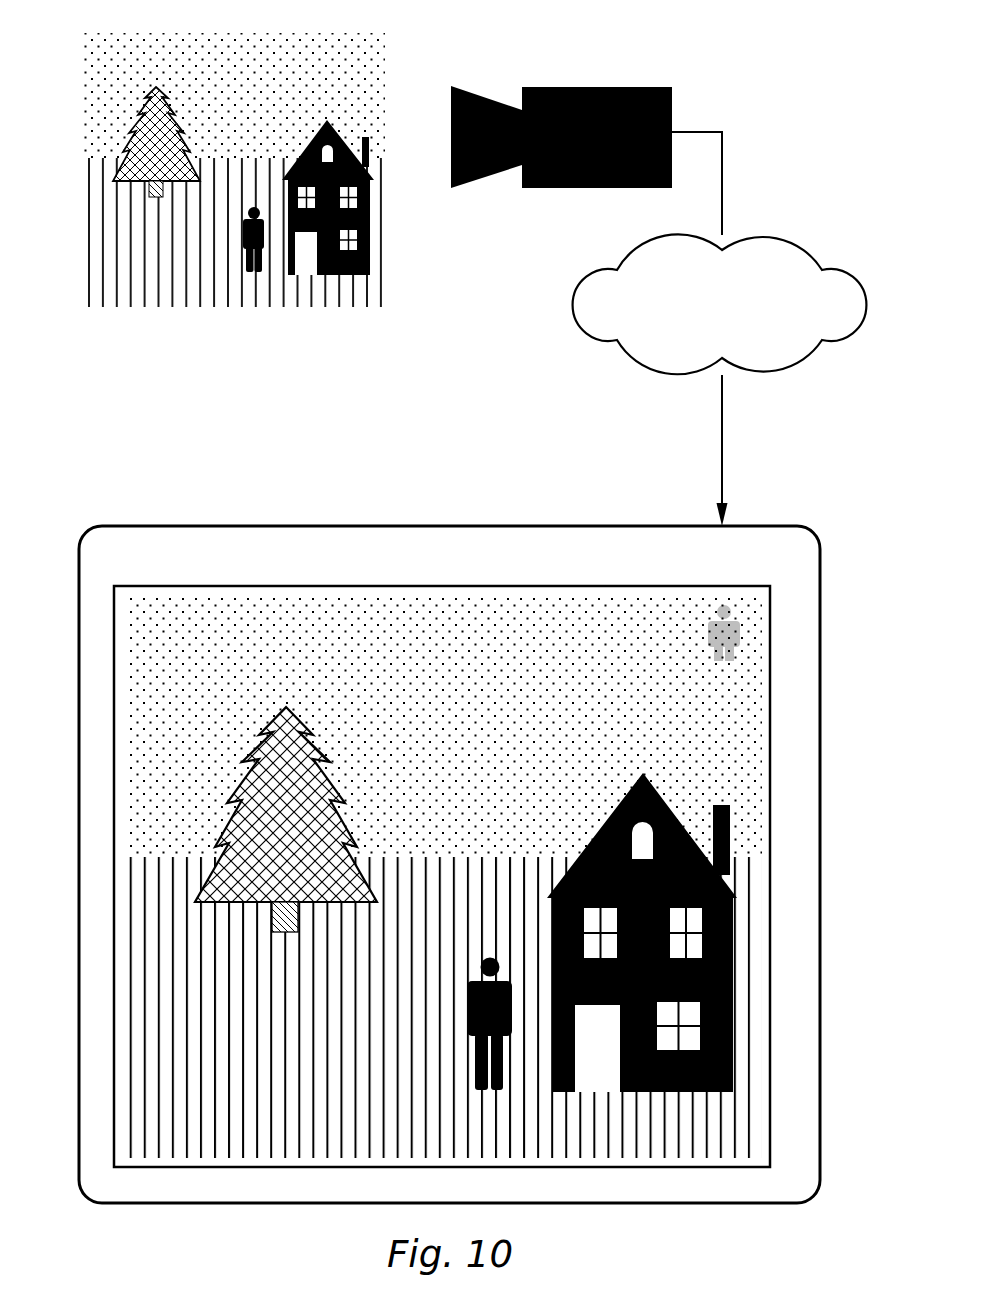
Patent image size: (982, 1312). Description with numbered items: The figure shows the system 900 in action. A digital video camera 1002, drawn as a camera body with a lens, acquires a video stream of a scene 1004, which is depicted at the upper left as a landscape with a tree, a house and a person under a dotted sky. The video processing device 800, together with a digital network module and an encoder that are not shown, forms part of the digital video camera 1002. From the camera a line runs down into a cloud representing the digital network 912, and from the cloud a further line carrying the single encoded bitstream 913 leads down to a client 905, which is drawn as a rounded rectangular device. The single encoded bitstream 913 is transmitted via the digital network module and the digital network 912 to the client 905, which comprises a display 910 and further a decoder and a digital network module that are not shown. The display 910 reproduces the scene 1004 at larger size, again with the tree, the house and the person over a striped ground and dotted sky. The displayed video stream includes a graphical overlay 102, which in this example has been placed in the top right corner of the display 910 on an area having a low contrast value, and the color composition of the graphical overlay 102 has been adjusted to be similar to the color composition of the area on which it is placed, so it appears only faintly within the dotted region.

The digital video camera 1002 is at (575, 87).
The video processing device 800 is at (672, 110).
The system 900 is at (811, 173).
The digital network 912 is at (702, 315).
The single encoded bitstream 913 is at (722, 446).
The client 905 is at (563, 479).
The display 910 is at (456, 808).
The scene 1004 is at (243, 357).
The graphical overlay 102 is at (737, 625).